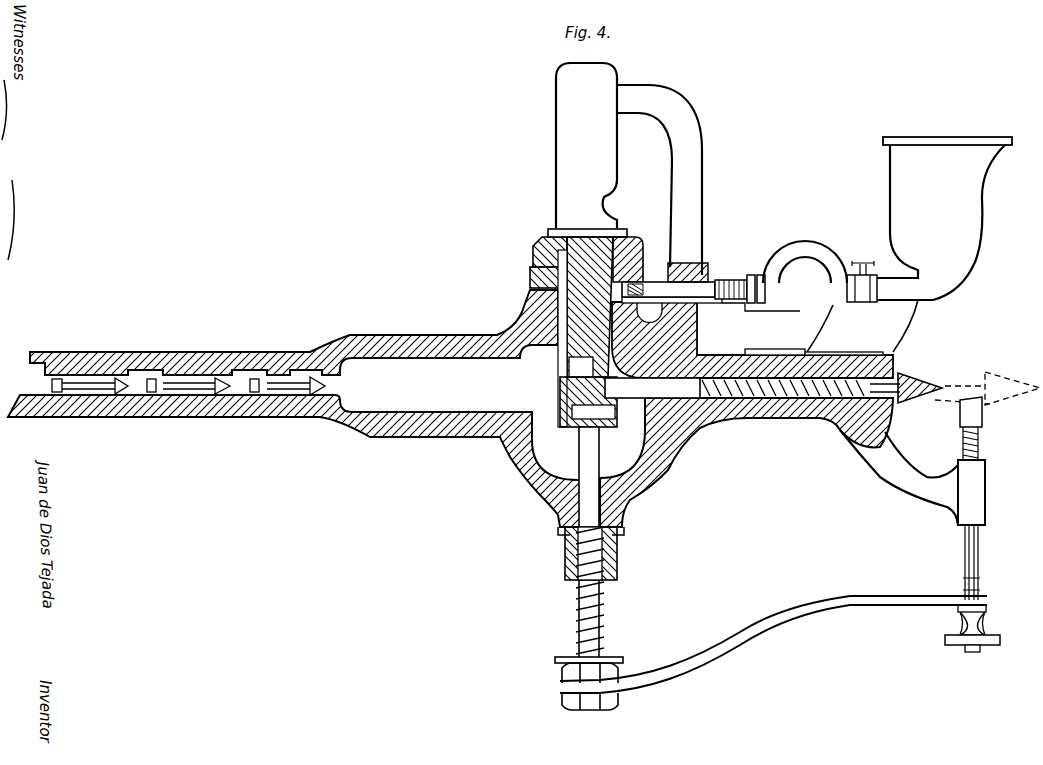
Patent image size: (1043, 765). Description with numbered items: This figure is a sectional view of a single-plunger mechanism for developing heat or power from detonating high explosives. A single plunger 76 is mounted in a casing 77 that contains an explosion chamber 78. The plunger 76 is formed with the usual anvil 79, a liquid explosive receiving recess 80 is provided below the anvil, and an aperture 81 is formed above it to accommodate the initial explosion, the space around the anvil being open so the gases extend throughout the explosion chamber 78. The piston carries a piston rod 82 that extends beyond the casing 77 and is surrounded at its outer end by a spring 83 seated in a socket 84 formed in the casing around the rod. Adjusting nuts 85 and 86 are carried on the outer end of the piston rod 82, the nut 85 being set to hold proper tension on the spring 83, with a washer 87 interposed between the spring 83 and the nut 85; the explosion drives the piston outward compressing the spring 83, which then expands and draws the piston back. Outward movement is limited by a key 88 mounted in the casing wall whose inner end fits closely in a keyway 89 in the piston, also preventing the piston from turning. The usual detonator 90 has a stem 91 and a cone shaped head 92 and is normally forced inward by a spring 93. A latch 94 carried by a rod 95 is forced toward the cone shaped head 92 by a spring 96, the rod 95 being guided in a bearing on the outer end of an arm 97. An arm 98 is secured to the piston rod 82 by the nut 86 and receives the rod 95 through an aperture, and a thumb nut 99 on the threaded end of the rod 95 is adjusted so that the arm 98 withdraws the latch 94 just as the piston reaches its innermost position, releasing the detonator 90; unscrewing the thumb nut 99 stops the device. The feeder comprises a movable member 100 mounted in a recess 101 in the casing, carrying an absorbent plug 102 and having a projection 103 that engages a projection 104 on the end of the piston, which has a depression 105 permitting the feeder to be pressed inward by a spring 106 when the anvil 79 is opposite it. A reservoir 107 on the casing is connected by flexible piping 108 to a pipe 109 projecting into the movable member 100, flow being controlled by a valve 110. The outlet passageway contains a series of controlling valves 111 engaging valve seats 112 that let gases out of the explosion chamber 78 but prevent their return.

The plunger 76 is at (565, 299).
The casing 77 is at (503, 437).
The explosion chamber 78 is at (564, 385).
The anvil 79 is at (583, 408).
The liquid explosive receiving recess 80 is at (588, 412).
The aperture 81 is at (520, 368).
The piston rod 82 is at (592, 509).
The spring 83 is at (605, 603).
The socket 84 is at (617, 549).
The adjusting nut 85 is at (562, 670).
The adjusting nut 86 is at (579, 712).
The washer 87 is at (623, 660).
The key 88 is at (530, 274).
The keyway 89 is at (545, 250).
The detonator 90 is at (652, 388).
The stem 91 is at (812, 398).
The cone shaped head 92 is at (905, 380).
The spring 93 is at (723, 387).
The latch 94 is at (982, 413).
The rod 95 is at (978, 552).
The spring 96 is at (962, 446).
The arm 97 is at (932, 490).
The arm 98 is at (785, 631).
The thumb nut 99 is at (948, 627).
The movable member 100 is at (685, 185).
The recess 101 is at (646, 269).
The absorbent plug 102 is at (700, 327).
The projection 103 is at (618, 113).
The projection 104 is at (586, 145).
The depression 105 is at (606, 204).
The spring 106 is at (722, 280).
The reservoir 107 is at (909, 244).
The flexible piping 108 is at (807, 252).
The pipe 109 is at (690, 282).
The valve 110 is at (748, 278).
The controlling valve 111 is at (310, 377).
The valve seat 112 is at (223, 378).